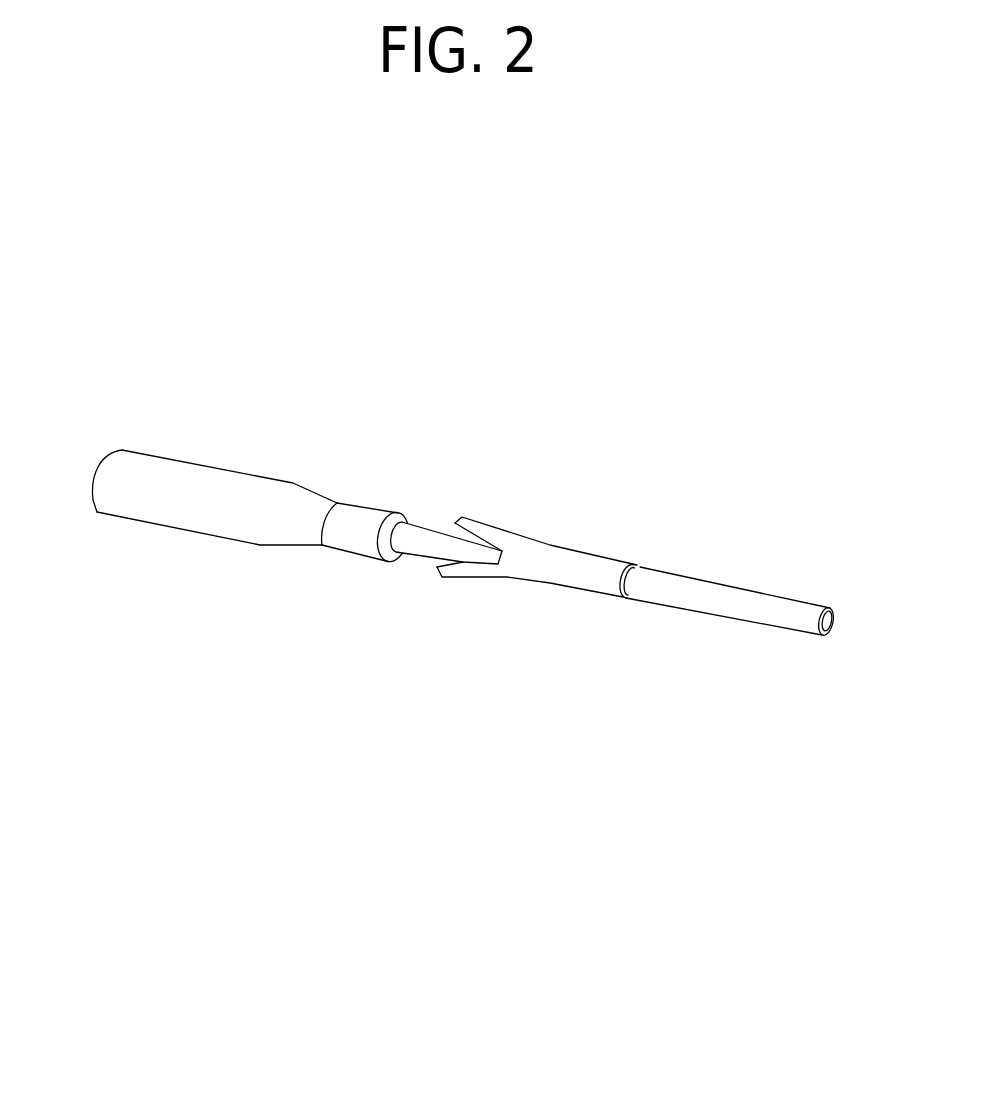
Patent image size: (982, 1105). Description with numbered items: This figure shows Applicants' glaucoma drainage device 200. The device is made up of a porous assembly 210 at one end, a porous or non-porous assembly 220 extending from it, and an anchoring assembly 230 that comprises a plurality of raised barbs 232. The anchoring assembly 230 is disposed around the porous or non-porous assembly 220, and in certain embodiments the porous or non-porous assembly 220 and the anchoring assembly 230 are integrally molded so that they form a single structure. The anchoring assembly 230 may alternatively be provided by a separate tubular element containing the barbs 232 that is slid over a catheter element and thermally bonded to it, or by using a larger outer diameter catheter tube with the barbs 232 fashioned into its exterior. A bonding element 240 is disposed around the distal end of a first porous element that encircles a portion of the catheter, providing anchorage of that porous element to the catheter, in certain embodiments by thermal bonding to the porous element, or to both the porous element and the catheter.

The glaucoma drainage device 200 is at (438, 815).
The porous assembly 210 is at (368, 651).
The porous or non-porous assembly 220 is at (820, 724).
The anchoring assembly 230 is at (602, 558).
The raised barbs 232 is at (481, 524).
The bonding element 240 is at (377, 508).